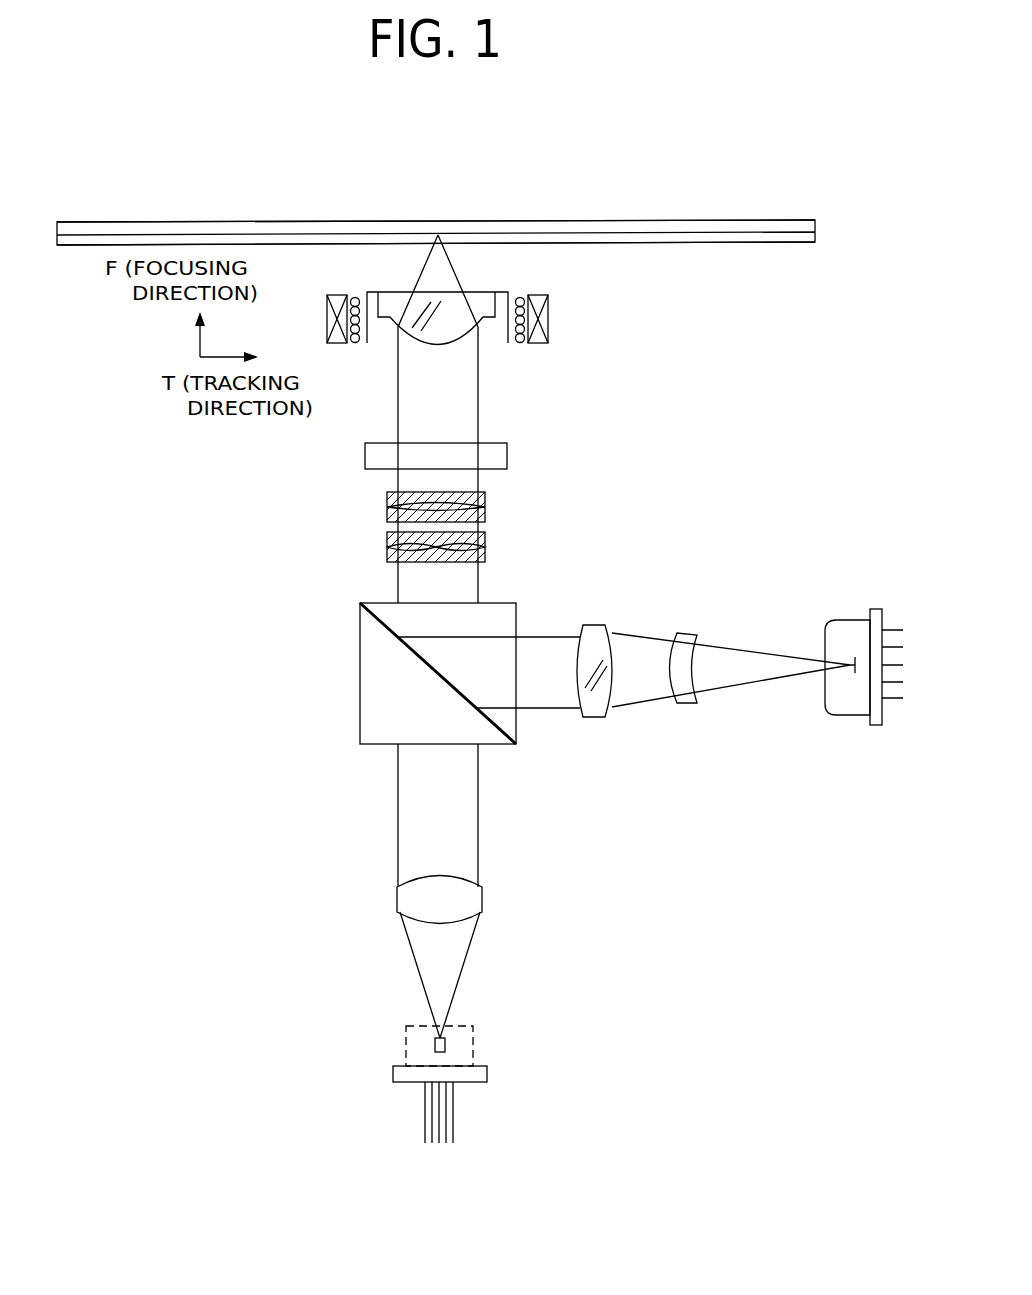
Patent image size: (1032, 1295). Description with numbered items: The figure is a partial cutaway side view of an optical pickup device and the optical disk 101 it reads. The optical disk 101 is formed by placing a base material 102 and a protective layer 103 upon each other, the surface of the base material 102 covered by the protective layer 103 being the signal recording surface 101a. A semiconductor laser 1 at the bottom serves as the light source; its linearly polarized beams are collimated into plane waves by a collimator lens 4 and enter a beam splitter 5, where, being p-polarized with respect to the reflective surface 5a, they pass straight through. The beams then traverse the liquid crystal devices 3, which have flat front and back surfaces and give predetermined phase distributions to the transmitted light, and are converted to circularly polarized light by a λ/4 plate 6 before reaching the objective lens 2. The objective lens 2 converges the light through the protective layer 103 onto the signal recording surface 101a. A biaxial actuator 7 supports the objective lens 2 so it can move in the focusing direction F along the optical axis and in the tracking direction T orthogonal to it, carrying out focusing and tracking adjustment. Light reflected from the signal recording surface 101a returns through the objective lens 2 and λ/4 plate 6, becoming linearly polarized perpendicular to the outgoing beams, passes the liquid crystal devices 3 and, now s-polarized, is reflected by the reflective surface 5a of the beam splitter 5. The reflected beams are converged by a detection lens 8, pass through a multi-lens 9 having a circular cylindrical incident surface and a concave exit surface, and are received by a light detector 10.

The semiconductor laser 1 is at (435, 1047).
The objective lens 2 is at (452, 333).
The liquid crystal devices 3 is at (362, 533).
The collimator lens 4 is at (400, 900).
The beam splitter 5 is at (373, 655).
The reflective surface 5a is at (495, 733).
The λ/4 plate 6 is at (375, 452).
The biaxial actuator 7 is at (548, 317).
The detection lens 8 is at (601, 718).
The multi-lens 9 is at (687, 703).
The light detector 10 is at (848, 620).
The optical disk 101 is at (803, 214).
The signal recording surface 101a is at (363, 233).
The base material 102 is at (758, 220).
The protective layer 103 is at (777, 243).